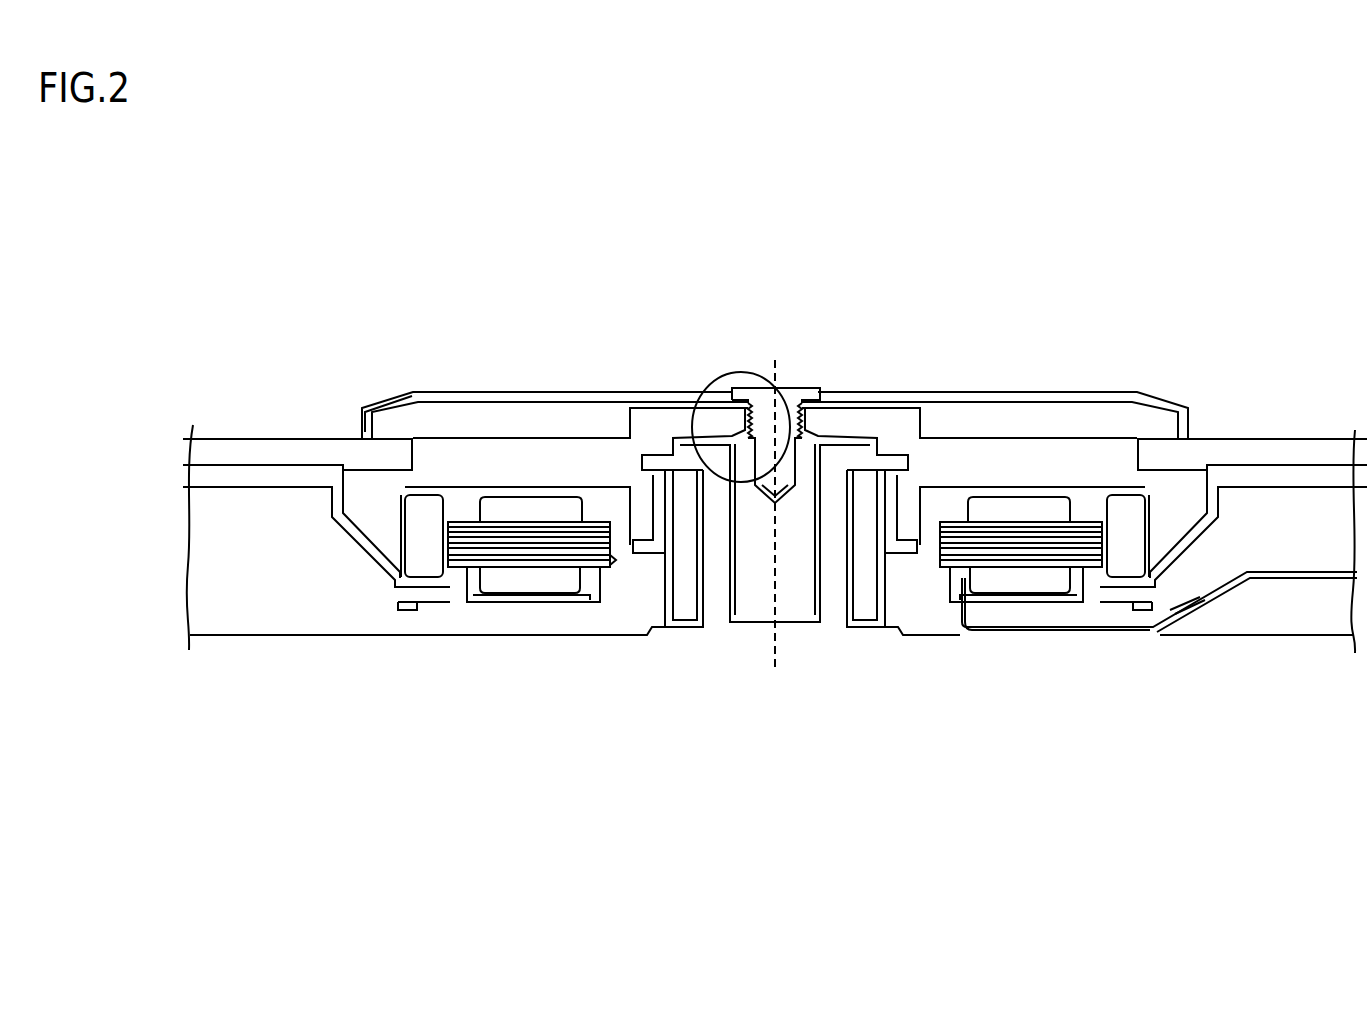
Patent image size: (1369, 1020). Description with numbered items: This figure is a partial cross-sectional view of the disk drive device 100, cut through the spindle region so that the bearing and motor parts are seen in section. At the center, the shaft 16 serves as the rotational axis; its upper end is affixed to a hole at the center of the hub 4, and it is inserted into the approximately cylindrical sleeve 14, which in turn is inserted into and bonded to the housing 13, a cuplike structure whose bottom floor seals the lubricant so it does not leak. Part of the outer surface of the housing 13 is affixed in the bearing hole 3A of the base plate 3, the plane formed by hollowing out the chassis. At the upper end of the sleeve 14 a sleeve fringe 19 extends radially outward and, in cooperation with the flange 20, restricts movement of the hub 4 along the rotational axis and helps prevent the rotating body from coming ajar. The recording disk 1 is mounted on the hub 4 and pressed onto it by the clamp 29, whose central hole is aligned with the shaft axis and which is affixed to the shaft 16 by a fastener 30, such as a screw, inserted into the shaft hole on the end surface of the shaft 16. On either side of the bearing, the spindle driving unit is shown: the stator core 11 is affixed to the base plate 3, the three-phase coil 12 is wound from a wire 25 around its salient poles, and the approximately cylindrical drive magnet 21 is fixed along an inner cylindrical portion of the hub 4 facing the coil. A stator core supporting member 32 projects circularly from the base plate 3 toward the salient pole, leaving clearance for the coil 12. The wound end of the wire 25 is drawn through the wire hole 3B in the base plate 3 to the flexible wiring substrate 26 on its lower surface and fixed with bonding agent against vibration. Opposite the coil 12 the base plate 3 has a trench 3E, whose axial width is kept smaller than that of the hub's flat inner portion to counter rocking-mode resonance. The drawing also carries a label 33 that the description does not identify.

The disk drive device 100 is at (258, 293).
The recording disk 1 is at (245, 448).
The base plate 3 is at (213, 640).
The bearing hole 3A is at (893, 607).
The wire hole 3B is at (962, 583).
The trench 3E is at (561, 623).
The hub 4 is at (487, 452).
The stator core 11 is at (495, 543).
The three-phase coil 12 is at (573, 582).
The housing 13 is at (680, 612).
The sleeve 14 is at (731, 608).
The shaft 16 is at (795, 597).
The sleeve fringe 19 is at (857, 442).
The flange 20 is at (655, 450).
The drive magnet 21 is at (1128, 557).
The wire 25 is at (1028, 627).
The flexible wiring substrate 26 is at (1250, 587).
The clamp 29 is at (398, 403).
The fastener 30 is at (789, 390).
The stator core supporting member 32 is at (1090, 580).
The magnet 33 is at (438, 555).